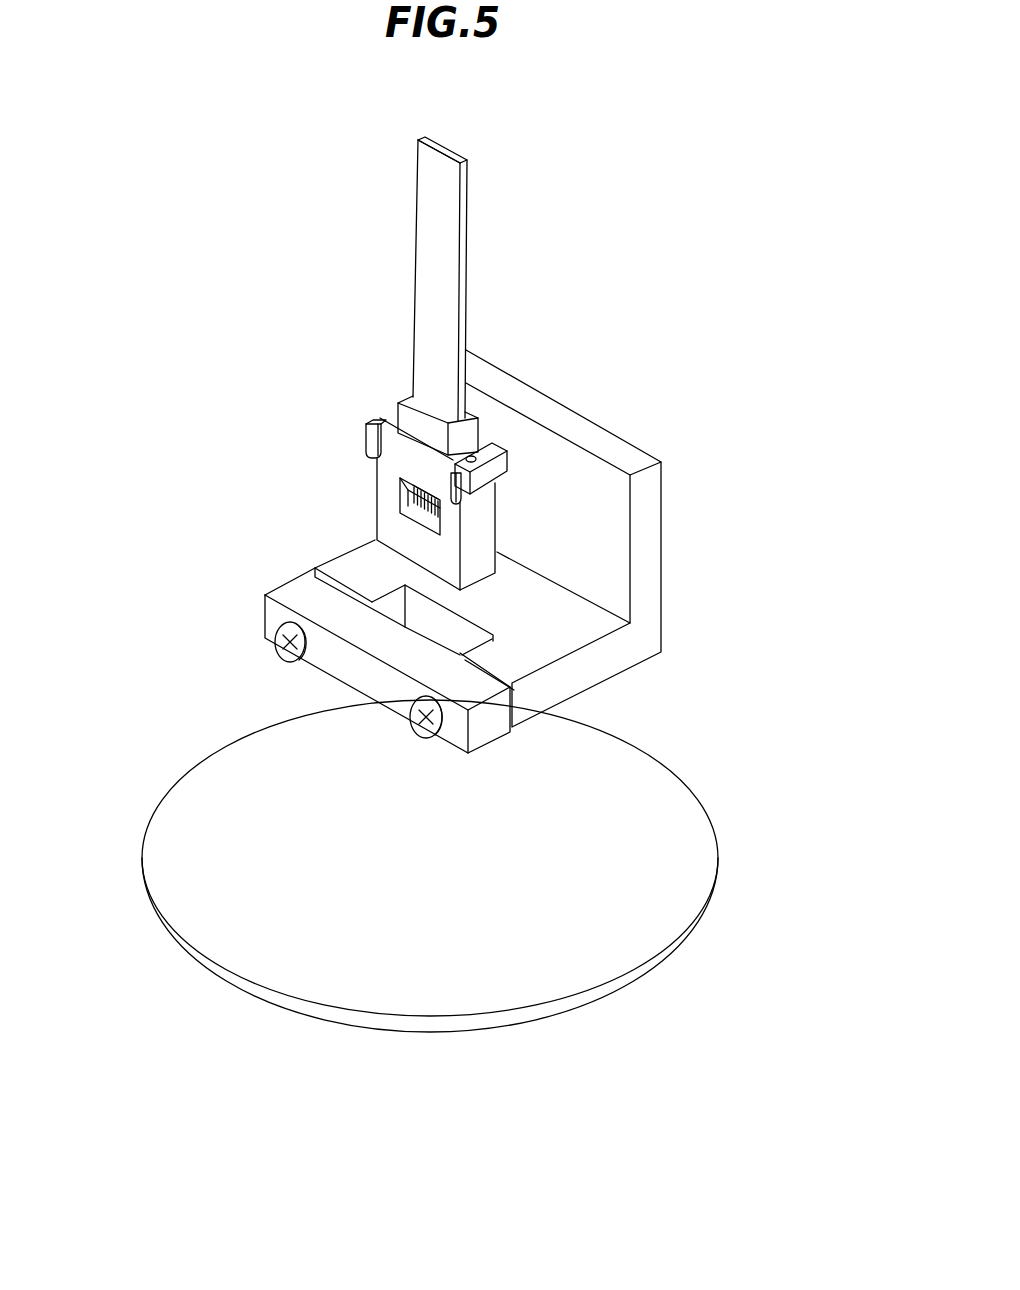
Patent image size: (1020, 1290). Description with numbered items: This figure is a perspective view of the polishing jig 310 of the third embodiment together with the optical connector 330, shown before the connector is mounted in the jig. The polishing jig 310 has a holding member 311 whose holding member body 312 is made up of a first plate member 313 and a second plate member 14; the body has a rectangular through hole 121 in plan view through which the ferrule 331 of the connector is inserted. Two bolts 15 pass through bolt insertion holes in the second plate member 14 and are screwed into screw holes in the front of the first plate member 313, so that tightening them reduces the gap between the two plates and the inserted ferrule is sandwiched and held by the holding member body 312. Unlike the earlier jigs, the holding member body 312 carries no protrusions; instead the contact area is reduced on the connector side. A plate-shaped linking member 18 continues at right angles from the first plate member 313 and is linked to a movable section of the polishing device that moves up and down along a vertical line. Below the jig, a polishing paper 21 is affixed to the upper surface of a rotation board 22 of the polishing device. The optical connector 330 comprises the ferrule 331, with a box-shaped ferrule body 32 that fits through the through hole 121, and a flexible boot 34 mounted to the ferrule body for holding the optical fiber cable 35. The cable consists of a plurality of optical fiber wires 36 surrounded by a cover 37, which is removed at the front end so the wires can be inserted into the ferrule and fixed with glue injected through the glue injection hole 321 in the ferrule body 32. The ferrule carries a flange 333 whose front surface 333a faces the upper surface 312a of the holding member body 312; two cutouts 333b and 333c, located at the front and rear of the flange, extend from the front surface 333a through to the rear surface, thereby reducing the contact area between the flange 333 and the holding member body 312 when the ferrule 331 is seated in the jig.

The second plate member 14 is at (487, 733).
The bolts 15 is at (276, 640).
The linking member 18 is at (675, 537).
The polishing paper 21 is at (172, 833).
The rotation board 22 is at (497, 1018).
The ferrule body 32 is at (383, 498).
The boot 34 is at (400, 418).
The optical fiber cable 35 is at (386, 279).
The optical fiber wires 36 is at (412, 503).
The cover 37 is at (427, 283).
The through hole 121 is at (432, 613).
The polishing jig 310 is at (558, 392).
The horizontal plate 311 is at (578, 516).
The holding member body 312 is at (551, 717).
The upper surface of the holding member body 312a is at (557, 620).
The side face of front bar 313 is at (570, 680).
The glue injection hole 321 is at (400, 528).
The optical connector 330 is at (392, 385).
The ferrule 331 is at (368, 477).
The flange 333 is at (425, 441).
The front surface of the flange 333a is at (465, 497).
The cutout 333b is at (395, 415).
The cutout 333c is at (492, 440).